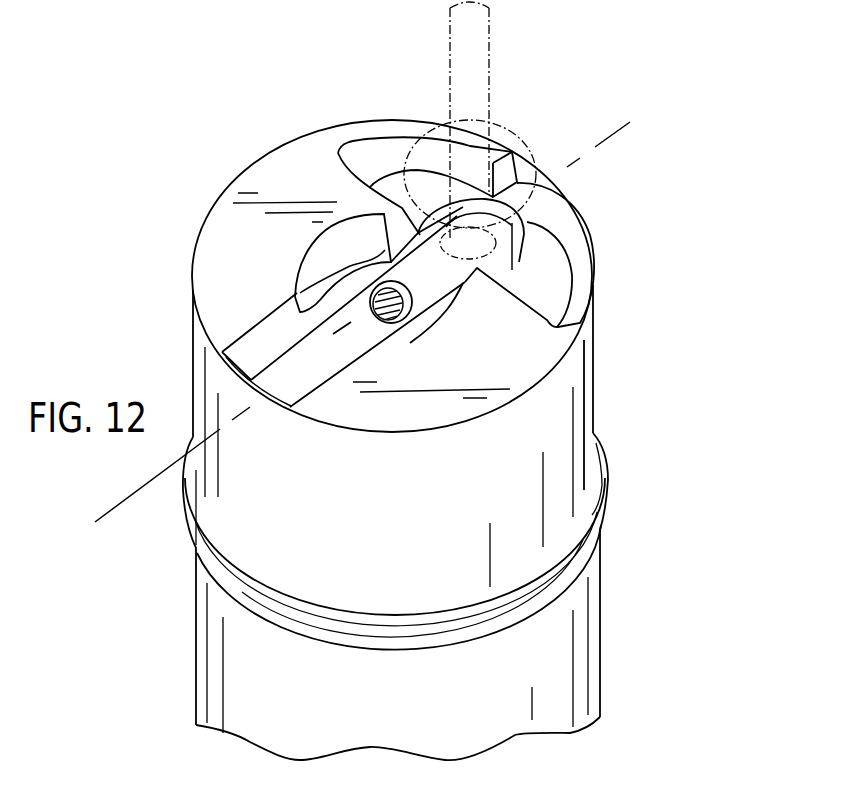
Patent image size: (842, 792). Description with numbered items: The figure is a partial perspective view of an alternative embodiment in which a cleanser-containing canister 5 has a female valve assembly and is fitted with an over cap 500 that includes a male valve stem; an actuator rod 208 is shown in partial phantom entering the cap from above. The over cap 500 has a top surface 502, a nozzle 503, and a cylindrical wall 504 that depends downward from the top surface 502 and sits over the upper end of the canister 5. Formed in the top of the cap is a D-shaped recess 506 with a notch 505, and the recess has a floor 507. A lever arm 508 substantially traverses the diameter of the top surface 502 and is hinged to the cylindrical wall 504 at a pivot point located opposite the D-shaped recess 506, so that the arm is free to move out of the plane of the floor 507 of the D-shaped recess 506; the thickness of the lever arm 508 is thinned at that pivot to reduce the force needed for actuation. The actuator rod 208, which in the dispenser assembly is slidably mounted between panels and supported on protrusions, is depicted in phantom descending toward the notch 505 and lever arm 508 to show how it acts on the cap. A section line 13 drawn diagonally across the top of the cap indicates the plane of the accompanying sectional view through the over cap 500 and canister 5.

The over cap 500 is at (616, 246).
The top surface 502 is at (252, 280).
The nozzle 503 is at (343, 307).
The cylindrical wall 504 is at (413, 520).
The notch 505 is at (532, 110).
The D-shaped recess 506 is at (551, 305).
The floor 507 is at (547, 293).
The lever arm 508 is at (432, 283).
The actuator rod 208 is at (477, 55).
The canister 5 is at (600, 656).
The section line 13- 13 is at (150, 553).